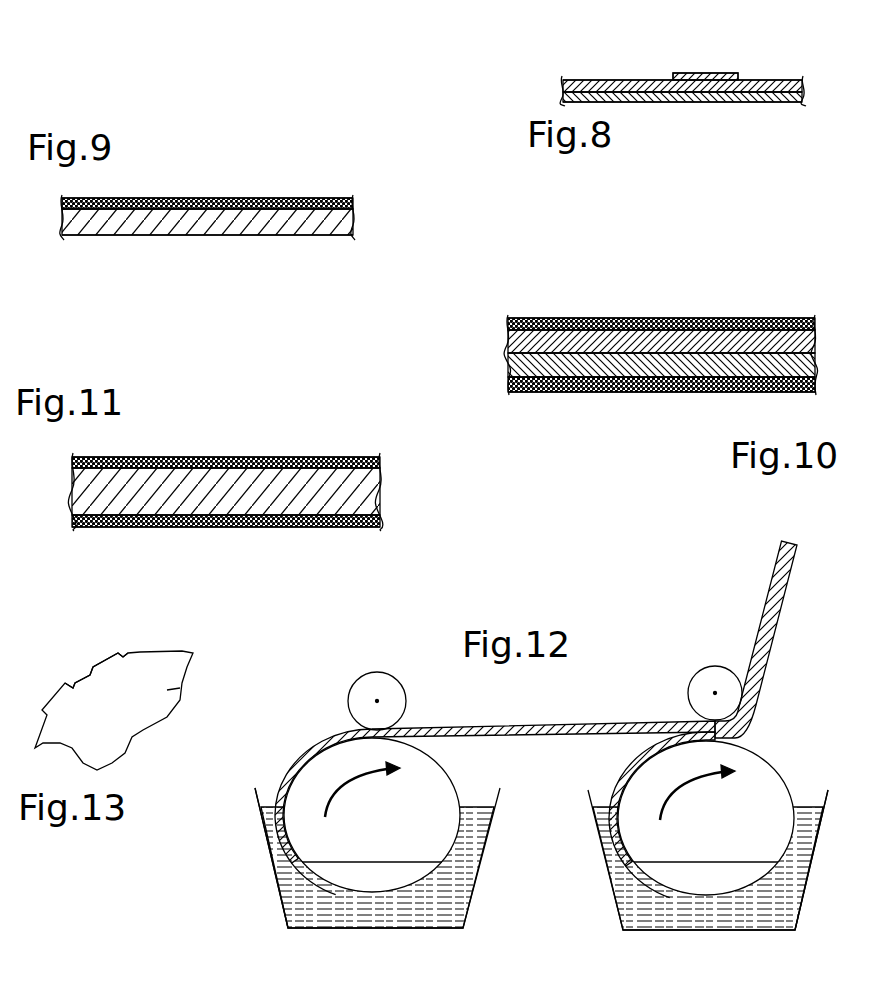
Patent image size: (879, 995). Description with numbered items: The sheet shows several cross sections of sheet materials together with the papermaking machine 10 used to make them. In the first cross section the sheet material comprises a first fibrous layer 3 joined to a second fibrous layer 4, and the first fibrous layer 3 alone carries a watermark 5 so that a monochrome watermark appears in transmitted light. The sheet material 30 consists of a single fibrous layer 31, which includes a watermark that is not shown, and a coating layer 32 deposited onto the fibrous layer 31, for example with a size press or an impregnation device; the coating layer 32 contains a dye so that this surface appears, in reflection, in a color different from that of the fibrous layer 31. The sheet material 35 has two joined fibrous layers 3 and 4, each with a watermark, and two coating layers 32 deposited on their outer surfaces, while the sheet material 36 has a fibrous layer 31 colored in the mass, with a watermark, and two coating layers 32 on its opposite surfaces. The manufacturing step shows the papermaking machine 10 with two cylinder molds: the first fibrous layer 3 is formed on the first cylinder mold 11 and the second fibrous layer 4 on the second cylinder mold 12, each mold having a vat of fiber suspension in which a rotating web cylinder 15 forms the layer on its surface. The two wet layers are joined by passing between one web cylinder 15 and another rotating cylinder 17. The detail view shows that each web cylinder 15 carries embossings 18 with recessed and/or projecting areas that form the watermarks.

In FIG. 8, the first fibrous layer 3 is at (760, 88).
In FIG. 10, the first fibrous layer 3 is at (510, 338).
In FIG. 12, the first fibrous layer 3 is at (338, 742).
In FIG. 8, the second fibrous layer 4 is at (712, 97).
In FIG. 10, the second fibrous layer 4 is at (508, 368).
In FIG. 12, the second fibrous layer 4 is at (648, 754).
In FIG. 8, the watermark 5 is at (716, 74).
In FIG. 12, the papermaking machine 10 is at (508, 759).
In FIG. 12, the first cylinder mold 11 is at (442, 820).
In FIG. 12, the second cylinder mold 12 is at (691, 759).
In FIG. 13, the rotating web cylinder 15 is at (190, 669).
In FIG. 12, the rotating cylinder 17 is at (688, 691).
In FIG. 13, the embossing 18 is at (73, 688).
In FIG. 9, the sheet material 30 is at (216, 190).
In FIG. 9, the fibrous layer 31 is at (210, 222).
In FIG. 11, the fibrous layer 31 is at (75, 485).
In FIG. 9, the coating layer 32 is at (243, 199).
In FIG. 10, the coating layer 32 is at (616, 318).
In FIG. 11, the coating layer 32 is at (222, 457).
In FIG. 10, the sheet material 35 is at (631, 338).
In FIG. 11, the sheet material 36 is at (199, 477).